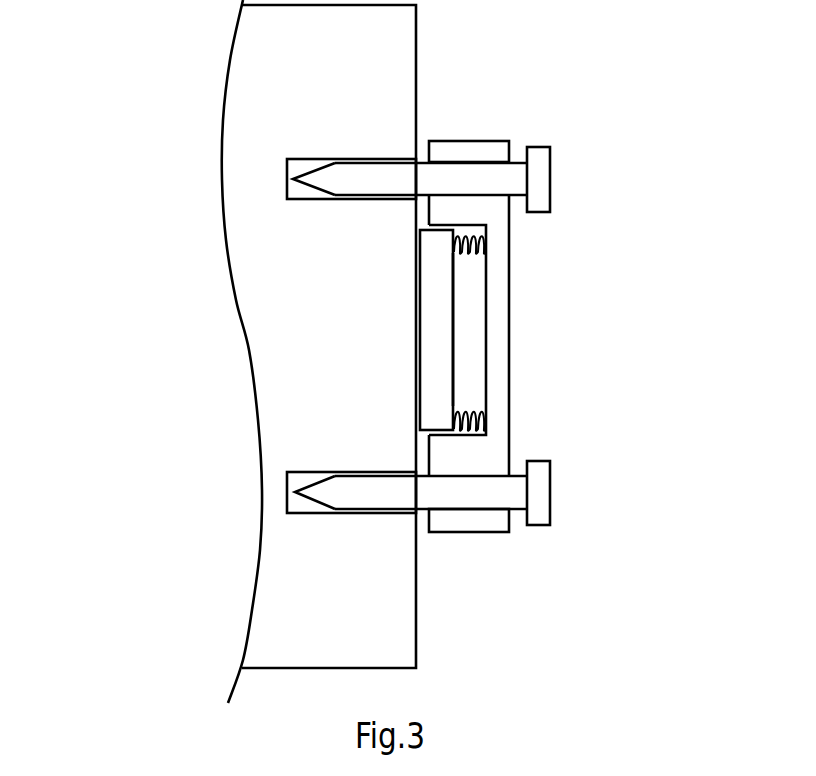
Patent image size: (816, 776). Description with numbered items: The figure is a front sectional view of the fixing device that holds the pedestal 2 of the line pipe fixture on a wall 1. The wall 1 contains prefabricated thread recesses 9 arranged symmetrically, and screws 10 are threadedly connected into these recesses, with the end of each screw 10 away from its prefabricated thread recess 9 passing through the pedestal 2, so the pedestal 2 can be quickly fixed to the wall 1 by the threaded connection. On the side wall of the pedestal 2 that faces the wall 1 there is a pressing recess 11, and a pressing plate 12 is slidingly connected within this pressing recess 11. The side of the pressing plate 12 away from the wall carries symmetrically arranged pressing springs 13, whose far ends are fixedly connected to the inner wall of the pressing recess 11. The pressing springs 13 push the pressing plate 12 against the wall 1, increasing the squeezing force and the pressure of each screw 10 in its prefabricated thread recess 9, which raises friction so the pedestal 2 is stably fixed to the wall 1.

The wall 1 is at (340, 313).
The pedestal 2 is at (457, 457).
The prefabricated thread recess 9 is at (297, 164).
The screw 10 is at (473, 178).
The pressing recess 11 is at (467, 280).
The pressing plate 12 is at (432, 347).
The pressing spring 13 is at (485, 425).